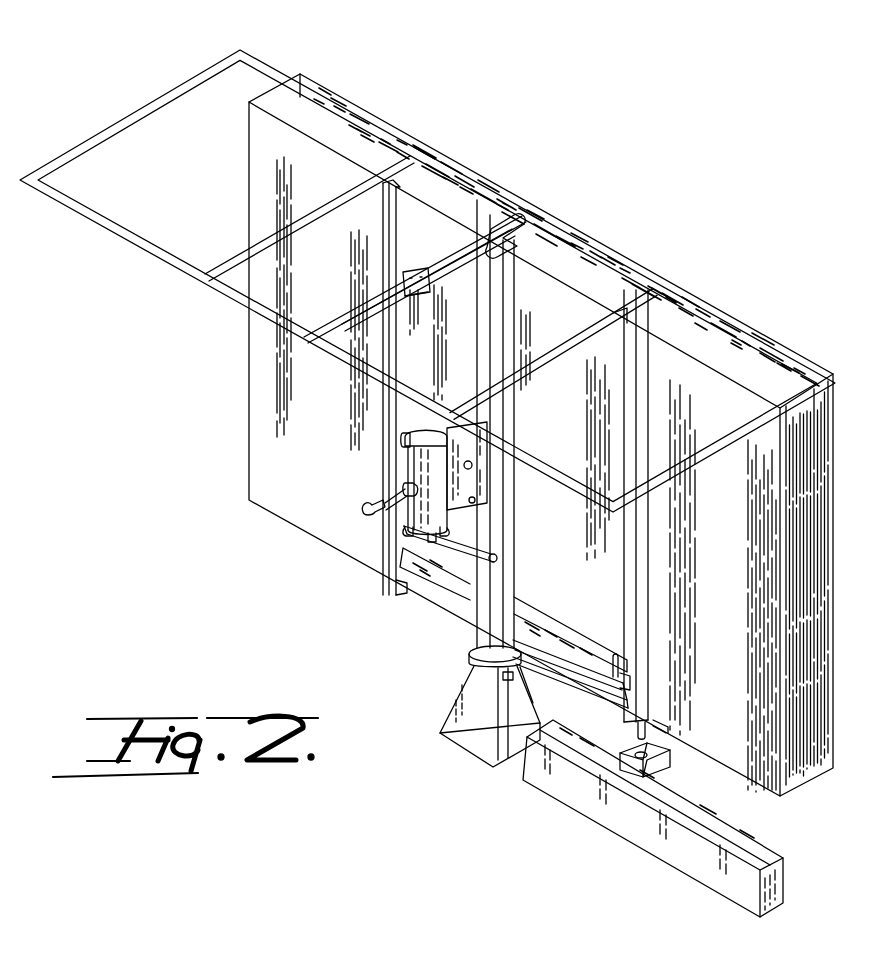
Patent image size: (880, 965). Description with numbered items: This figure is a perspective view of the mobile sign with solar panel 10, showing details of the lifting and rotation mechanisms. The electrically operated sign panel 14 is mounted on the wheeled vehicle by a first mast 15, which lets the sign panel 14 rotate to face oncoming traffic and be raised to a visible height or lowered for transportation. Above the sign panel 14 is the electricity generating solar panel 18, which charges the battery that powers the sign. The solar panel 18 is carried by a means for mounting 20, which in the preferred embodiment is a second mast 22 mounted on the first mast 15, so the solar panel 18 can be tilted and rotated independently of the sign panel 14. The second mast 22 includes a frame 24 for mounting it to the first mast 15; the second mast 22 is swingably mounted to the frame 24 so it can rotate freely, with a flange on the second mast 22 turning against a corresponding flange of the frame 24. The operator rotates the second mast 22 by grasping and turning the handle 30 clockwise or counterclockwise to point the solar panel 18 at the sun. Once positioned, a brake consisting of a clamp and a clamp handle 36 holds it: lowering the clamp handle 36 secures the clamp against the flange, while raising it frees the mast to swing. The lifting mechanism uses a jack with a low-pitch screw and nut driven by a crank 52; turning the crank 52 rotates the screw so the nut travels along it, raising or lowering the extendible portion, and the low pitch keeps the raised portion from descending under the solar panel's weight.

The mobile sign with solar panel 10 is at (637, 184).
The sign panel 14 is at (249, 378).
The first mast 15 is at (495, 628).
The solar panel 18 is at (148, 100).
The means for mounting 20 is at (413, 417).
The second mast 22 is at (467, 466).
The frame 24 is at (450, 470).
The handle 30 is at (455, 562).
The clamp handle 36 is at (360, 509).
The crank 52 is at (415, 560).